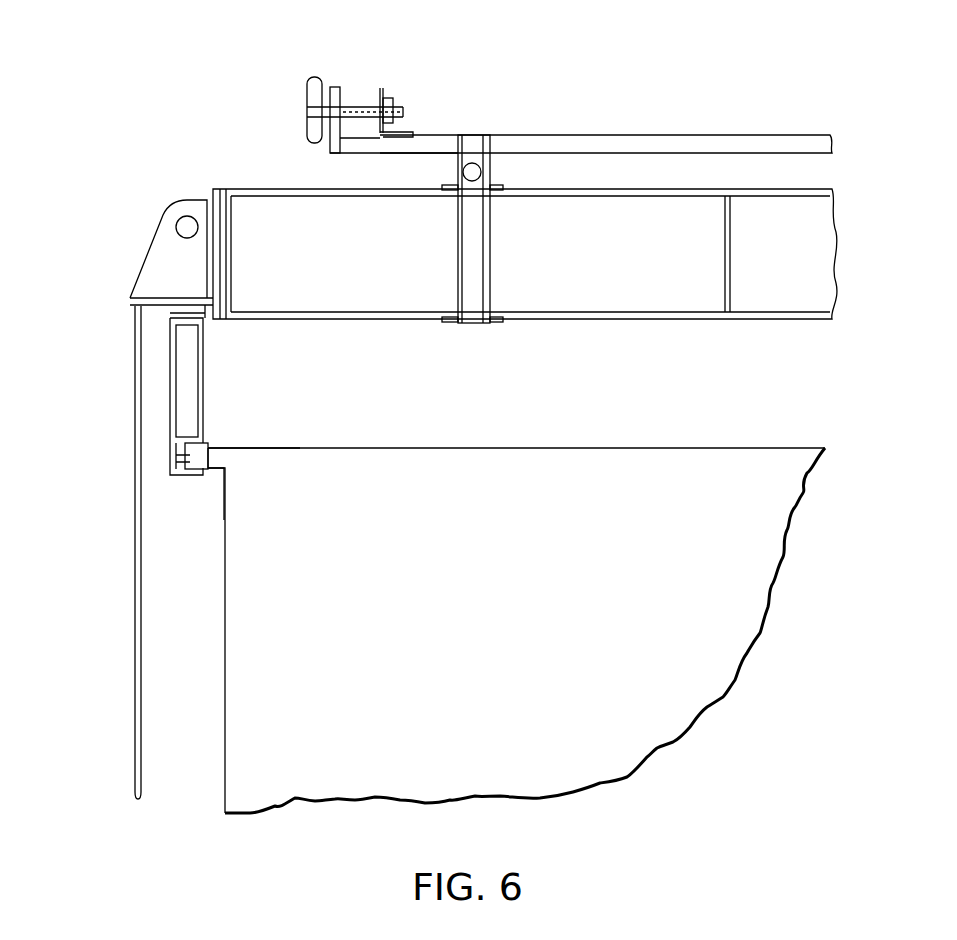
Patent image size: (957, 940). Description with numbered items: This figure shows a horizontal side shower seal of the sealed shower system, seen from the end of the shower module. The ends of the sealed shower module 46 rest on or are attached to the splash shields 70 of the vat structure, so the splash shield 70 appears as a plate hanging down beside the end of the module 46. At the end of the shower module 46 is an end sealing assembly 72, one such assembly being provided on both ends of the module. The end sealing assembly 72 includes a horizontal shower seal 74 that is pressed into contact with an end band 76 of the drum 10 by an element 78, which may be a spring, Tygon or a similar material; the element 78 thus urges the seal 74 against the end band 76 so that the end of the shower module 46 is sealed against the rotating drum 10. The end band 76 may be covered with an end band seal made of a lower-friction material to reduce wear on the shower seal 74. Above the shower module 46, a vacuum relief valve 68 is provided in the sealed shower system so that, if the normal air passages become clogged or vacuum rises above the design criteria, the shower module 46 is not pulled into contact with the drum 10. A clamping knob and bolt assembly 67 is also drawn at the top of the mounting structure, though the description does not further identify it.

The drum 10 is at (456, 618).
The sealed shower module 46 is at (393, 256).
The clamp knob and bolt 67 is at (335, 87).
The vacuum relief valve 68 is at (476, 172).
The splash shield 70 is at (135, 578).
The end sealing assembly 72 is at (203, 388).
The horizontal shower seal 74 is at (192, 462).
The end band 76 is at (222, 447).
The element 78 is at (180, 458).